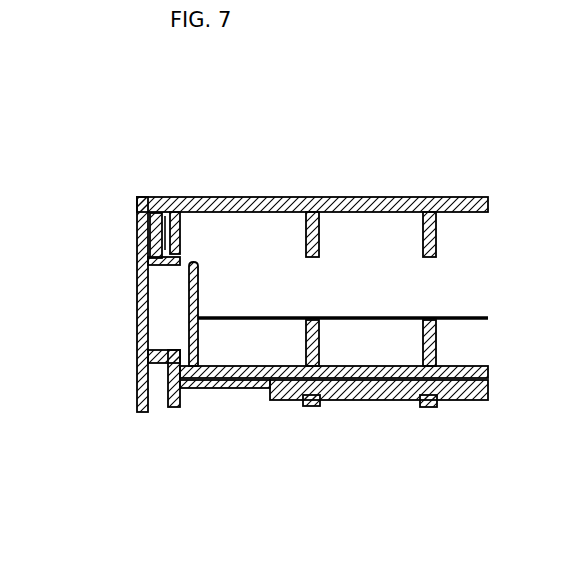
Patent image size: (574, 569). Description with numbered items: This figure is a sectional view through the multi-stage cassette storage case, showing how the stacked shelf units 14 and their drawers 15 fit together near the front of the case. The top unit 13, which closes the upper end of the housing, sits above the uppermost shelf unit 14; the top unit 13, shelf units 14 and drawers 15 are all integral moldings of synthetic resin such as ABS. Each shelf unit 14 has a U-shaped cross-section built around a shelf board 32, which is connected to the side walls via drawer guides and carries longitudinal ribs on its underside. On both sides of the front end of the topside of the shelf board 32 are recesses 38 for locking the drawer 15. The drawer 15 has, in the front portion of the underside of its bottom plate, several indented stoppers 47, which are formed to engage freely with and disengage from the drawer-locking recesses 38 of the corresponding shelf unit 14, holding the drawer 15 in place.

The top unit 13 is at (137, 226).
The shelf unit 14 is at (137, 378).
The drawer 15 is at (186, 300).
The shelf board 32 is at (235, 392).
The recess 38 is at (387, 402).
The indented stopper 47 is at (320, 404).